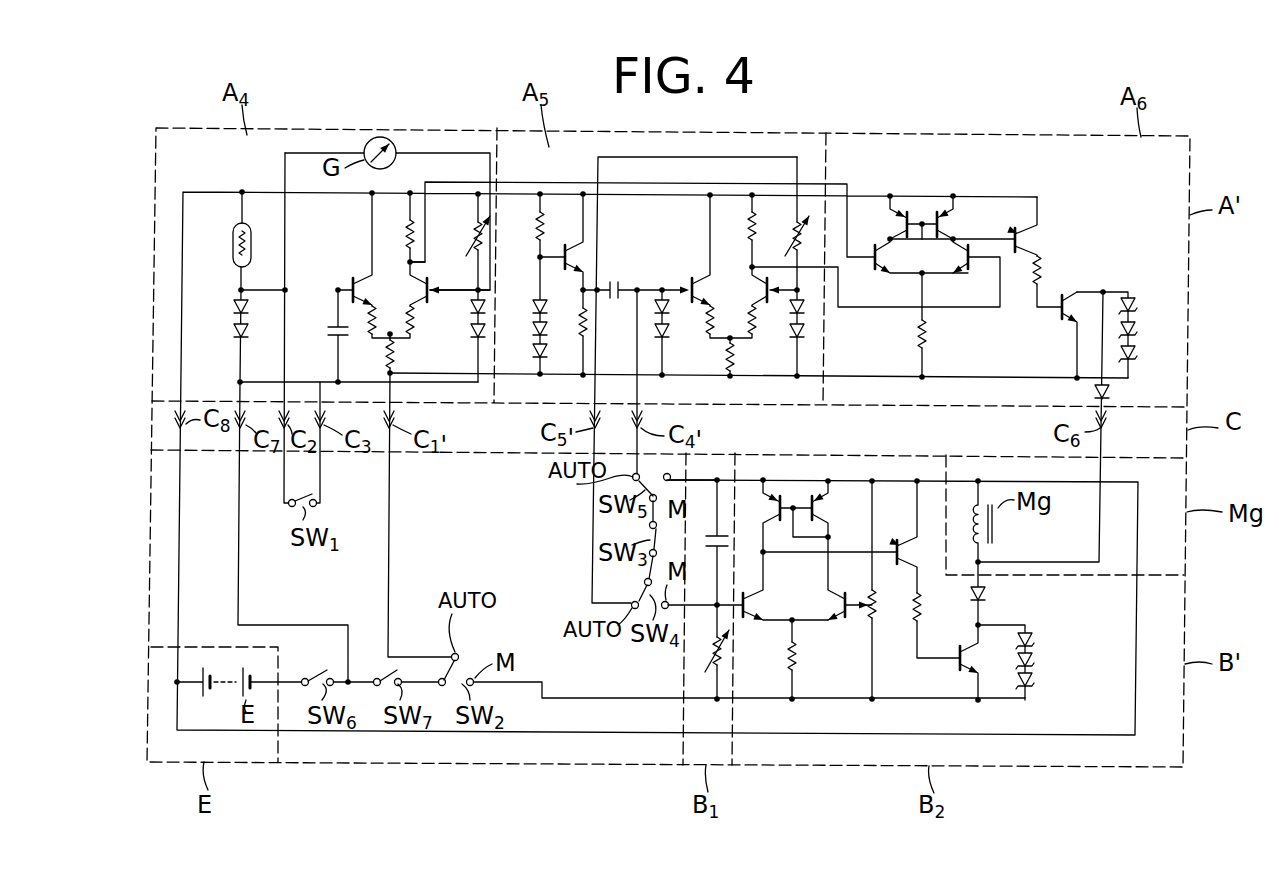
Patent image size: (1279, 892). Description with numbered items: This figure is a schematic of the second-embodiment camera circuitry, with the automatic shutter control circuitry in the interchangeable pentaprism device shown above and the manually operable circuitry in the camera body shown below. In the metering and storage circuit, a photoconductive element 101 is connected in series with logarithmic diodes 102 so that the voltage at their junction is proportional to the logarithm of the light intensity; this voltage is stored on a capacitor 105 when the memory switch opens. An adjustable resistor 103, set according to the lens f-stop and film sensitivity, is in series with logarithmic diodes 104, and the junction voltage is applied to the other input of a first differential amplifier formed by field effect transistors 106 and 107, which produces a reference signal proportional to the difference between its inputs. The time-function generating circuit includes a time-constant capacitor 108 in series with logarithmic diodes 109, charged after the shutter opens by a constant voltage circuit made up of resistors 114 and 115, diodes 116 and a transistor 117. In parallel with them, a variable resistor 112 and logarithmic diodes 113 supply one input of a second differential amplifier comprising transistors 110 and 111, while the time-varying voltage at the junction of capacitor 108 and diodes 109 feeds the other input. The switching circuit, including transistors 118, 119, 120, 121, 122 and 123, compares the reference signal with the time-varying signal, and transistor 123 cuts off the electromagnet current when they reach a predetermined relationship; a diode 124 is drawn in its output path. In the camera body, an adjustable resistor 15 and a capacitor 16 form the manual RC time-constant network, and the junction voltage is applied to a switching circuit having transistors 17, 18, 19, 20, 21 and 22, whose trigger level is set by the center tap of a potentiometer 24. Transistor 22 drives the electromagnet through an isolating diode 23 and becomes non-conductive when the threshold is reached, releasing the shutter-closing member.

The photoconductive element 101 is at (240, 236).
The logarithmic diodes 102 is at (232, 320).
The adjustable resistor 103 is at (476, 236).
The logarithmic diodes 104 is at (468, 335).
The capacitor 105 is at (348, 334).
The field effect transistor 106 is at (352, 282).
The field effect transistor 107 is at (443, 276).
The time-constant capacitor 108 is at (615, 280).
The logarithmic diodes 109 is at (670, 330).
The transistor 110 is at (697, 285).
The transistor 111 is at (760, 287).
The variable resistor 112 is at (795, 233).
The logarithmic diodes 113 is at (790, 335).
The resistor 114 is at (538, 230).
The resistor 115 is at (580, 318).
The diodes 116 is at (530, 318).
The transistor 117 is at (563, 252).
The transistor 118 is at (888, 262).
The transistor 119 is at (958, 262).
The transistor 120 is at (903, 224).
The transistor 121 is at (945, 224).
The transistor 122 is at (1033, 238).
The transistor 123 is at (1060, 296).
The diode 124 is at (1111, 392).
The adjustable resistor 15 is at (714, 648).
The capacitor 16 is at (712, 545).
The transistor 17 is at (755, 600).
The transistor 18 is at (843, 604).
The transistor 19 is at (777, 505).
The transistor 20 is at (823, 502).
The transistor 21 is at (905, 546).
The transistor 22 is at (958, 650).
The isolating diode 23 is at (988, 594).
The potentiometer 24 is at (875, 620).